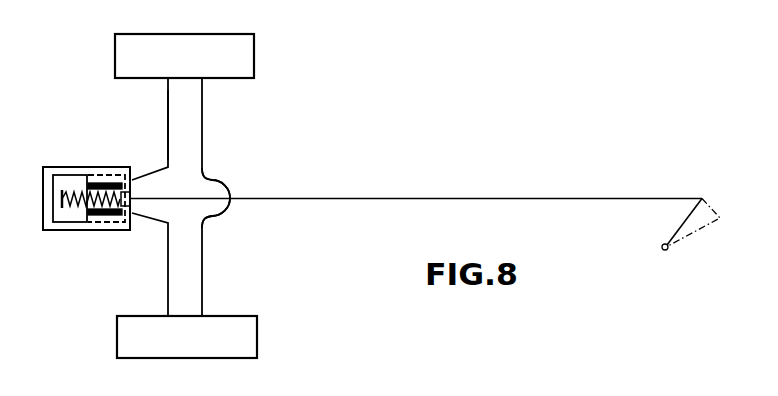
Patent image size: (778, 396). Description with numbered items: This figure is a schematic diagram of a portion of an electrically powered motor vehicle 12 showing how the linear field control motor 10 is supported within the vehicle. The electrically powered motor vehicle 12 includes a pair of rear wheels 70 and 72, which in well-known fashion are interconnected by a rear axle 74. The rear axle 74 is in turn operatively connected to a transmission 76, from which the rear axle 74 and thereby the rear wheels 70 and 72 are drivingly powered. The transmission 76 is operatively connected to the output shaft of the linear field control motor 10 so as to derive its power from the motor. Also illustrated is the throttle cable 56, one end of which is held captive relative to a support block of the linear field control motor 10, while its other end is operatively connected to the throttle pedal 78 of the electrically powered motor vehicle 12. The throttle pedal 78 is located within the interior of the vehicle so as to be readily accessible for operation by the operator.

The linear field control motor 10 is at (106, 167).
The electrically powered motor vehicle 12 is at (203, 120).
The throttle cable 56 is at (384, 197).
The rear wheel 70 is at (254, 56).
The rear wheel 72 is at (257, 331).
The rear axle 74 is at (168, 108).
The transmission 76 is at (199, 190).
The throttle pedal 78 is at (687, 218).